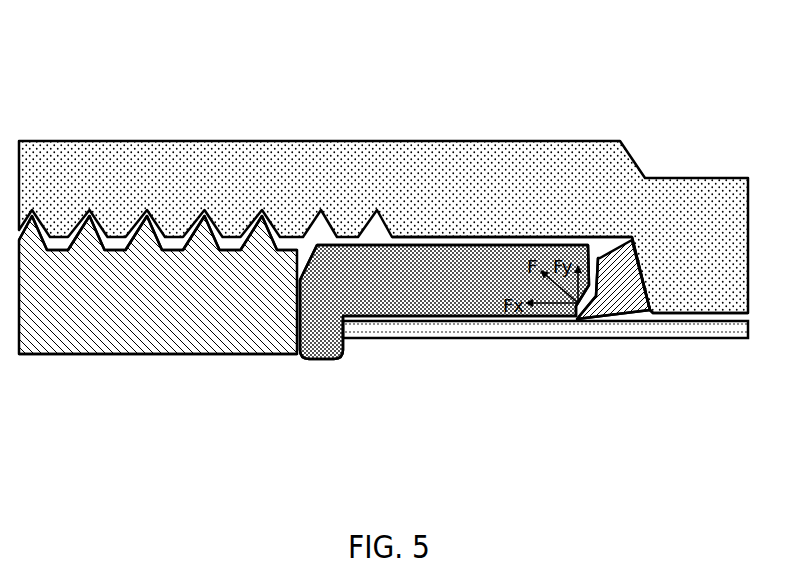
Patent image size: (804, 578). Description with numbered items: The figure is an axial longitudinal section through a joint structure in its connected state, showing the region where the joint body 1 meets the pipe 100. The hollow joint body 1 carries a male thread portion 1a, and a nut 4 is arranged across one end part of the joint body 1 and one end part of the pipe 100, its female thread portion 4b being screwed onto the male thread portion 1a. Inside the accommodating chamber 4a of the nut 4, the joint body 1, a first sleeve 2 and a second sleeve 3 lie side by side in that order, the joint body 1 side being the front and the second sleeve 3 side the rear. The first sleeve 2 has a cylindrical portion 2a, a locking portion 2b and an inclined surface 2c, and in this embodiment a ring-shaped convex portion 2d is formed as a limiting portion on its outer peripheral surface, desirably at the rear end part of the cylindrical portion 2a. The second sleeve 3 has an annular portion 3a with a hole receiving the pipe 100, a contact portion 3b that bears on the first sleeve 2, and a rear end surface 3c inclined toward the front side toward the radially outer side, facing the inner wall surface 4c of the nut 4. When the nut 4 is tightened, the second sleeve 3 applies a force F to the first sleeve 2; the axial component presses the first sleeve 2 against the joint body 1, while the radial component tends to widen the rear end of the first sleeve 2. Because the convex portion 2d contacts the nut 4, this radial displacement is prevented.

The joint body 1 is at (65, 355).
The male thread portion 1a is at (130, 222).
The first sleeve 2 is at (527, 101).
The cylindrical portion 2a is at (440, 248).
The locking portion 2b is at (317, 290).
The inclined surface 2c is at (604, 240).
The convex portion 2d is at (570, 242).
The second sleeve 3 is at (692, 427).
The annular portion 3a is at (606, 303).
The contact portion 3b is at (570, 307).
The rear end surface 3c is at (648, 290).
The nut 4 is at (223, 163).
The accommodating chamber 4a is at (612, 240).
The inner wall surface 4c is at (625, 240).
The female thread portion 4b is at (165, 355).
The pipe 100 is at (712, 330).